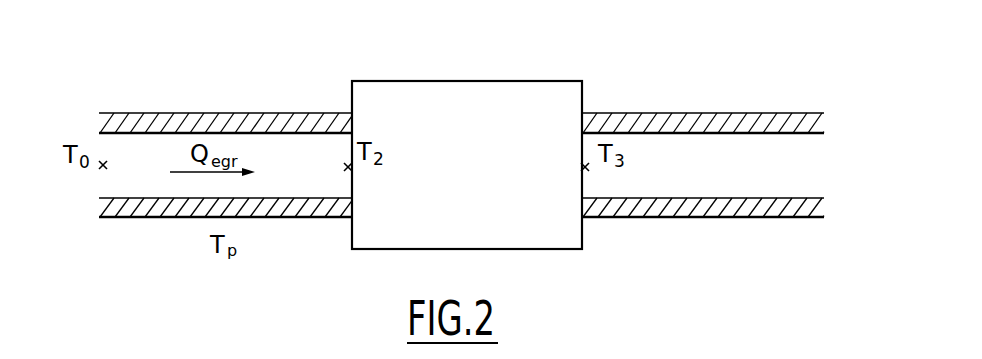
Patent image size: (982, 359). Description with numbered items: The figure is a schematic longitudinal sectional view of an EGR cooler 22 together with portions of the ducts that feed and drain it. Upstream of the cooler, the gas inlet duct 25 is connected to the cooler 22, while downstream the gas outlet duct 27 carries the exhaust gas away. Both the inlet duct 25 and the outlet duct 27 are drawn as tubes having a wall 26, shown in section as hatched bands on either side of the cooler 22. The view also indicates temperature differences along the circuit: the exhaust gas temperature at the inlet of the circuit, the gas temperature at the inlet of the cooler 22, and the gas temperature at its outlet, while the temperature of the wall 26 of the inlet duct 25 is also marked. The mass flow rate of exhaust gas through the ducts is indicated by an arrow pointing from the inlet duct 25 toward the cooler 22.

The gas inlet duct 25 is at (184, 106).
The wall 26 is at (302, 117).
The EGR cooler 22 is at (548, 100).
The gas outlet duct 27 is at (722, 102).